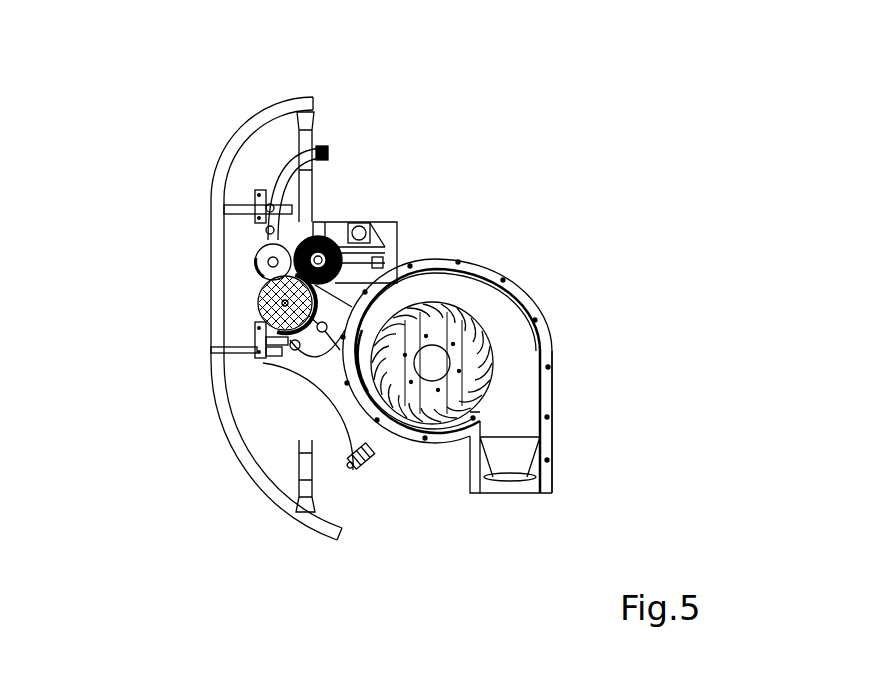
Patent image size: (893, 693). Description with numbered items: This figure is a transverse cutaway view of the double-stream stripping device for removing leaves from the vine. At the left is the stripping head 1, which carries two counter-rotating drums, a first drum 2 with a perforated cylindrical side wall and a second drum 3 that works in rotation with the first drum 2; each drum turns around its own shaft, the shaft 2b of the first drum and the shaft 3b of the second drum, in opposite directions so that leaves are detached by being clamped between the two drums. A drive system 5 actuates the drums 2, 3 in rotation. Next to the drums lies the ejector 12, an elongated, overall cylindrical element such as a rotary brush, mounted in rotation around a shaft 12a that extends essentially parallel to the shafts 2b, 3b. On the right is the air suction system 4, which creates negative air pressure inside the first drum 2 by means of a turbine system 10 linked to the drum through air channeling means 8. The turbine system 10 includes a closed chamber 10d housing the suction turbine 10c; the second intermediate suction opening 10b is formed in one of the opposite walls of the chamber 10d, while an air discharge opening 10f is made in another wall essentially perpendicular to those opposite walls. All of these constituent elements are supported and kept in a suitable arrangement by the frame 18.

The stripping head 1 is at (203, 122).
The first drum 2 is at (257, 337).
The shaft of first drum 2b is at (285, 303).
The second drum 3 is at (273, 260).
The shaft of second drum 3b is at (268, 255).
The air suction system 4 is at (592, 421).
The drive system 5 is at (309, 222).
The air channeling means 8 is at (327, 367).
The turbine system 10 is at (485, 250).
The second intermediate suction opening 10b is at (347, 387).
The suction turbine 10c is at (473, 330).
The closed chamber 10d is at (498, 275).
The air discharge opening 10f is at (503, 496).
The ejector 12 is at (330, 238).
The shaft of ejector 12a is at (350, 227).
The frame 18 is at (368, 223).